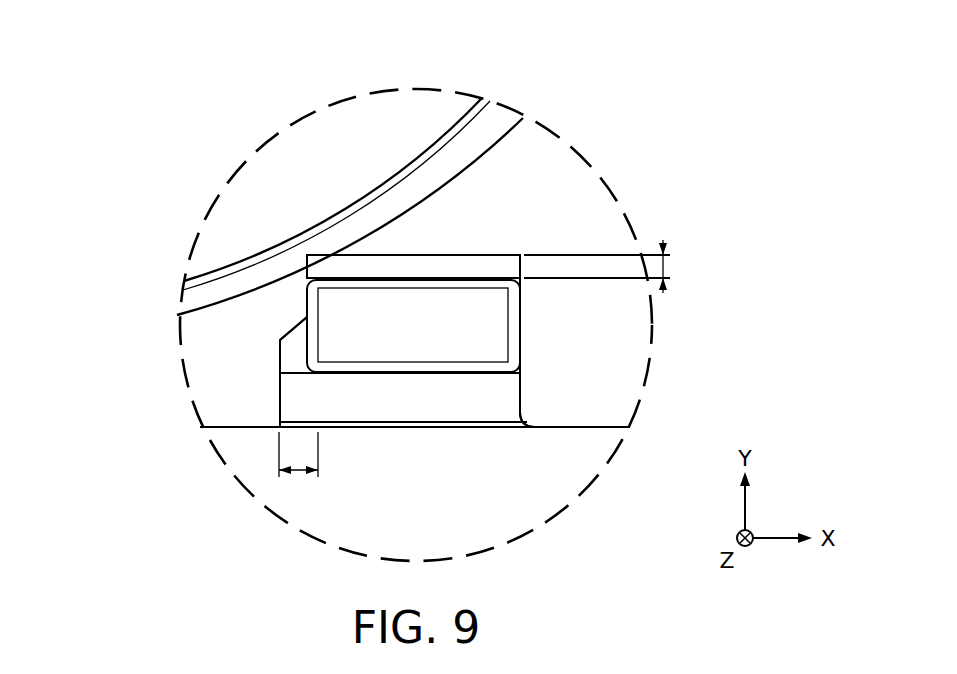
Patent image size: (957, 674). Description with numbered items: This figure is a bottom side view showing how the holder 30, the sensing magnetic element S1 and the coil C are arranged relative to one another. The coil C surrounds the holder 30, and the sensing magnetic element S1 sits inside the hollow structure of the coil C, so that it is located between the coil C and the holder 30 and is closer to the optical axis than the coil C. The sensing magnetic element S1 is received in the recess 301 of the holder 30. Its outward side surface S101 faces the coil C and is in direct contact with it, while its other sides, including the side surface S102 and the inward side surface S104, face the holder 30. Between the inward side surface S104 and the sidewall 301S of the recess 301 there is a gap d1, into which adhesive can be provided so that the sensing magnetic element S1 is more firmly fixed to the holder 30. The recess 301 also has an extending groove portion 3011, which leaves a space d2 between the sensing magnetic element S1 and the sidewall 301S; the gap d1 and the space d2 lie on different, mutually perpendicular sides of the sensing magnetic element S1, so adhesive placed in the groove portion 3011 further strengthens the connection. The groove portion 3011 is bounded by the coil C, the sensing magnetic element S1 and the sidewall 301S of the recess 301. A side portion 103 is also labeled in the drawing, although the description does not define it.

The inward side surface S104 is at (373, 278).
The sidewall 301S is at (402, 255).
The recess 301 is at (478, 253).
The gap d1 is at (680, 266).
The side surface S102 is at (303, 293).
The side portion 103 is at (522, 327).
The groove portion 3011 is at (293, 358).
The holder 30 is at (633, 363).
The space d2 is at (298, 468).
The sensing magnetic element S1 is at (363, 345).
The outward side surface S101 is at (422, 373).
The coil C is at (485, 395).